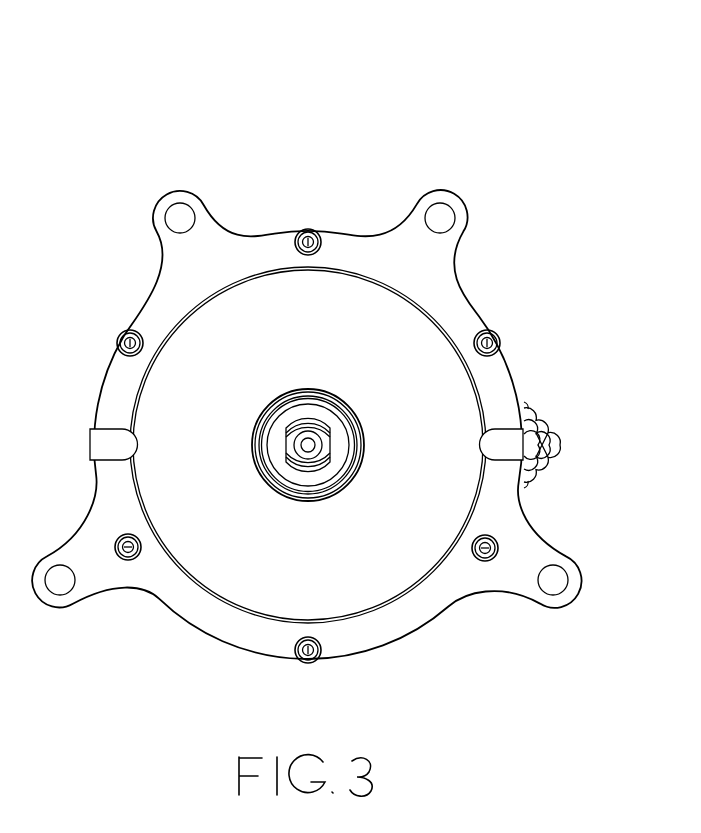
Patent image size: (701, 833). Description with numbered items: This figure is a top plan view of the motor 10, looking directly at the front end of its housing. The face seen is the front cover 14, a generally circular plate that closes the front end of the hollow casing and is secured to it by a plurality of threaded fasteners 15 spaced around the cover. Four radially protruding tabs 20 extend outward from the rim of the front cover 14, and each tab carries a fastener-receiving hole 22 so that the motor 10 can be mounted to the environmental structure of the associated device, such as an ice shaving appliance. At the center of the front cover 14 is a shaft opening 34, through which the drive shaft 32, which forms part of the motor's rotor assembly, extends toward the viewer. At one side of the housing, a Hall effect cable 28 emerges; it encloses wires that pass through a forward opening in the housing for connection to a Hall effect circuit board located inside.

The motor 10 is at (359, 87).
The front cover 14 is at (322, 367).
The threaded fasteners 15 is at (311, 230).
The radially protruding tabs 20 is at (168, 198).
The fastener-receiving hole 22 is at (183, 216).
The Hall effect cable 28 is at (560, 446).
The drive shaft 32 is at (331, 450).
The shaft opening 34 is at (252, 440).